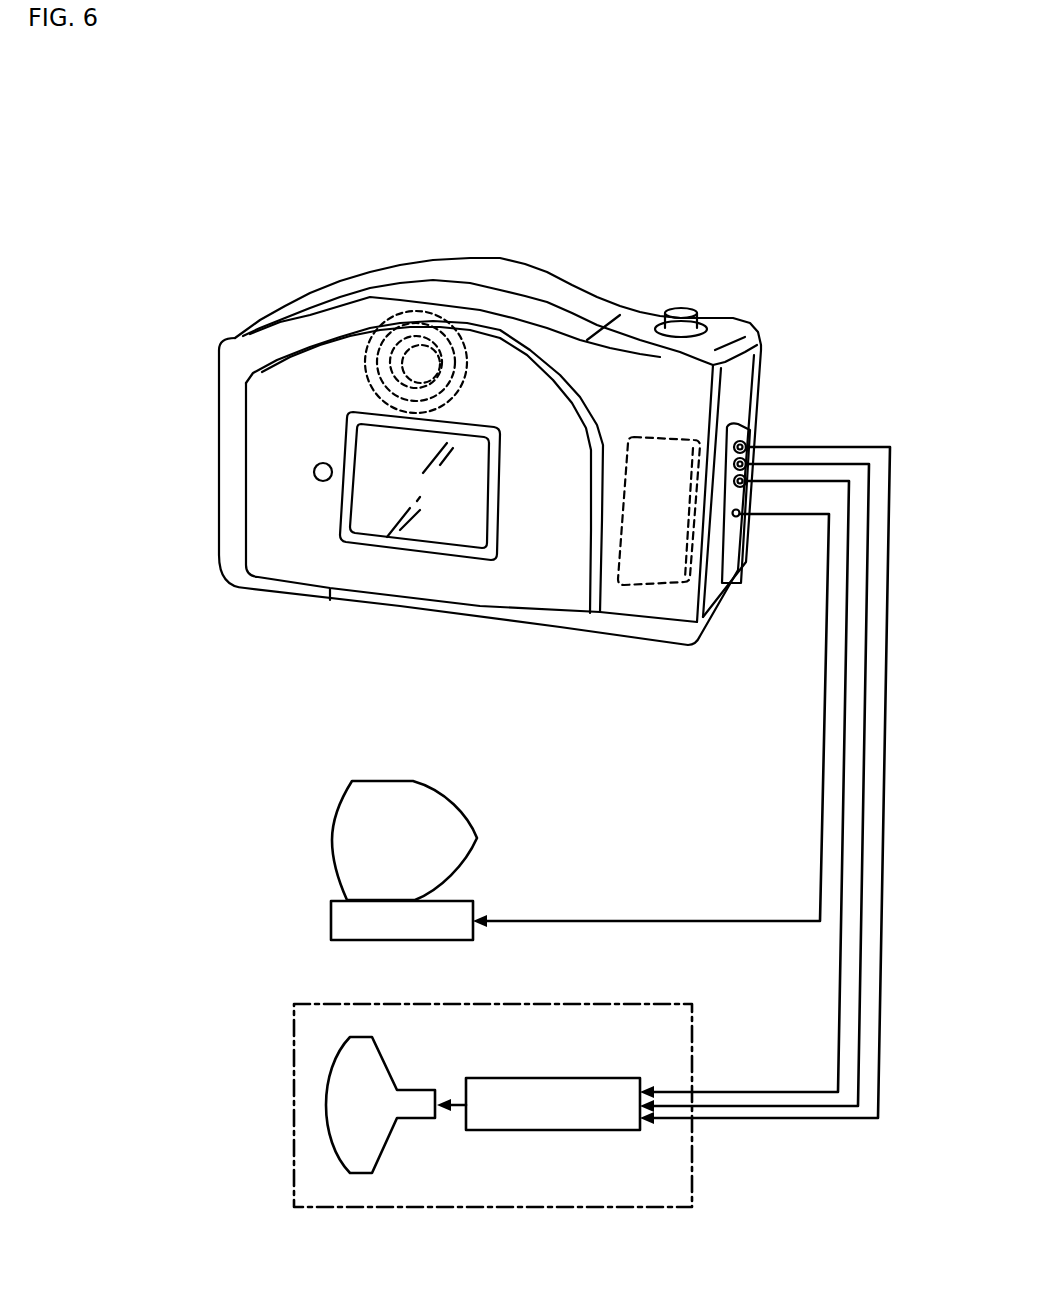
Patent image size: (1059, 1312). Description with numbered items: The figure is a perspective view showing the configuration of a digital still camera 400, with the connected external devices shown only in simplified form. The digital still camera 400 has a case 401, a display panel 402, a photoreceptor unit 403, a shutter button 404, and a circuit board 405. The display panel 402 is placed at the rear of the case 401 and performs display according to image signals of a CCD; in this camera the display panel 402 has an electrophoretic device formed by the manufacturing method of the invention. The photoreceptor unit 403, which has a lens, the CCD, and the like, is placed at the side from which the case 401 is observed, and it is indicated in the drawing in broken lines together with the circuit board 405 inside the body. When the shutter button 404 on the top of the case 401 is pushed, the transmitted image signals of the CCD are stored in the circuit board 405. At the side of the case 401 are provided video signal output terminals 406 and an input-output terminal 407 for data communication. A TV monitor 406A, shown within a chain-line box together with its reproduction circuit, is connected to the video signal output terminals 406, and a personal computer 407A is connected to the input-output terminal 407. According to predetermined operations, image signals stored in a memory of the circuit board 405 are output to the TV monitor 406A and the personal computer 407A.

The digital still camera 400 is at (575, 232).
The case 401 is at (229, 410).
The display panel 402 is at (455, 516).
The photoreceptor unit 403 is at (458, 305).
The shutter button 404 is at (681, 309).
The circuit board 405 is at (658, 552).
The video signal output terminals 406 is at (752, 425).
The input-output terminal 407 is at (733, 521).
The personal computer 407A is at (344, 818).
The TV monitor 406A is at (294, 1058).